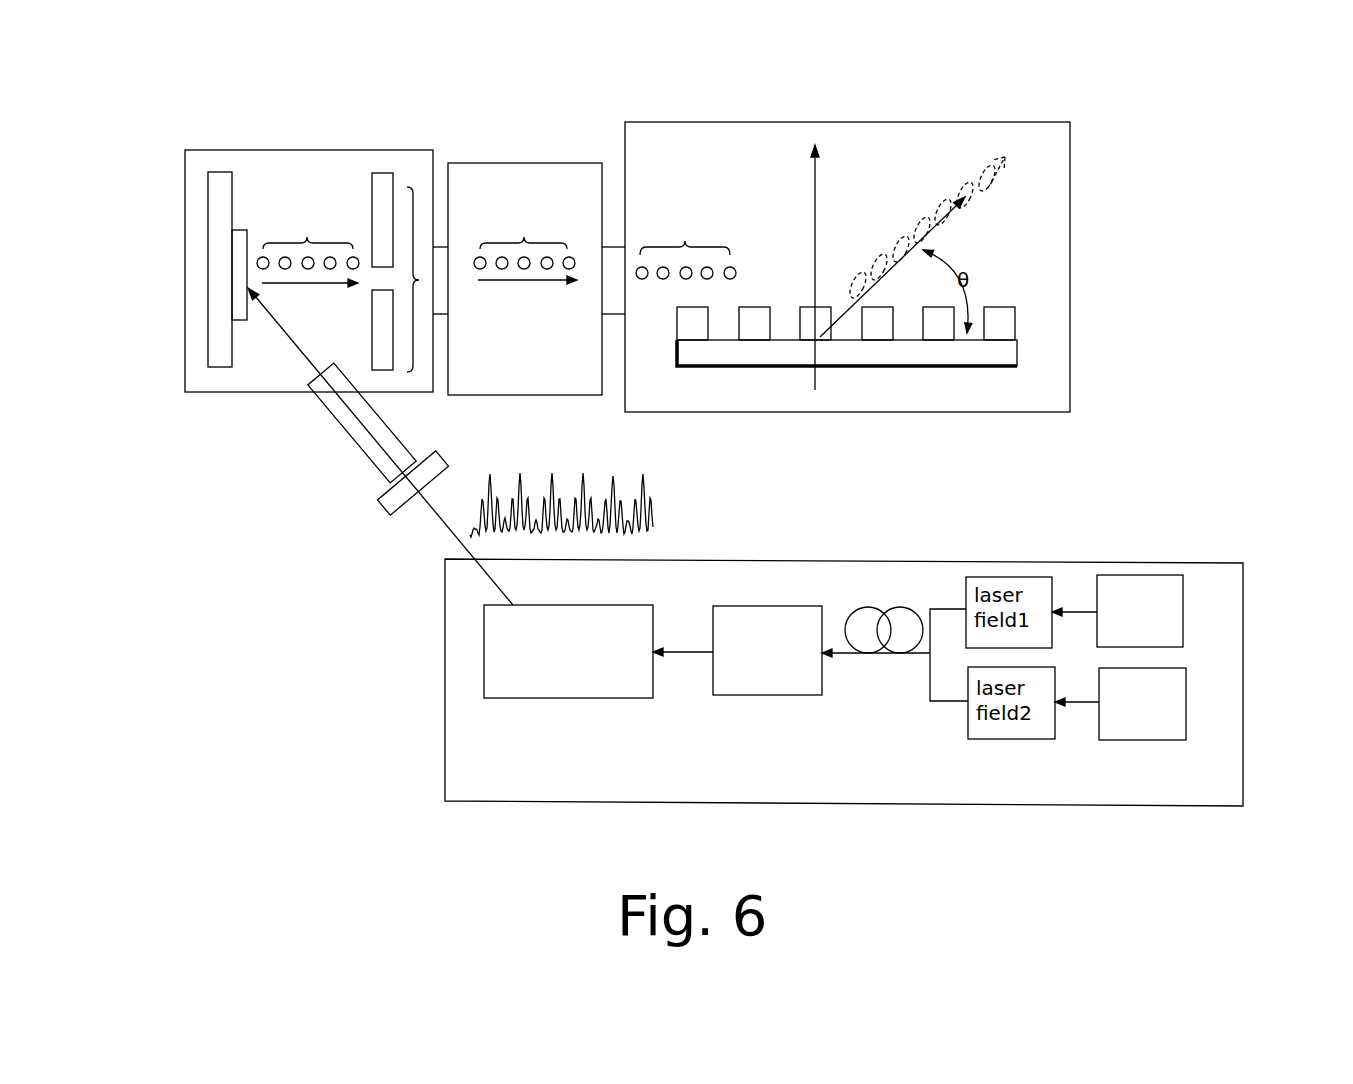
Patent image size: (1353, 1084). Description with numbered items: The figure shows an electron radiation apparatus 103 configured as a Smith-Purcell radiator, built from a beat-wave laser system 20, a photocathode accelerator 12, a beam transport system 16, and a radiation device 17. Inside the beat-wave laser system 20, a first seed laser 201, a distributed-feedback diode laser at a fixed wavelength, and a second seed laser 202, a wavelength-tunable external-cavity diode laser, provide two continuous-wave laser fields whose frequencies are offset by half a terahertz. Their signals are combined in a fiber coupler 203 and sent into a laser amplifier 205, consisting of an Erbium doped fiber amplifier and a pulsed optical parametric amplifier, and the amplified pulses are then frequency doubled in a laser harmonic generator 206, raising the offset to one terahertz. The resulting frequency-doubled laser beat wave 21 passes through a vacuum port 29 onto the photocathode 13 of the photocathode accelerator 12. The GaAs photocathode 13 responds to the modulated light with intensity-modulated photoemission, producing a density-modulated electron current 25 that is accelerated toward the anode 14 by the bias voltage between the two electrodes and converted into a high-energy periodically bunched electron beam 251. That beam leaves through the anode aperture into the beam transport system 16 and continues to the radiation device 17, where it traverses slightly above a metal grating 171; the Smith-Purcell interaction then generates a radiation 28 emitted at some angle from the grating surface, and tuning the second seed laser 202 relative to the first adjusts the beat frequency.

The electron radiation apparatus 103 is at (93, 92).
The photocathode accelerator 12 is at (184, 267).
The photocathode 13 is at (222, 172).
The density-modulated electron current 25 is at (307, 238).
The anode 14 is at (418, 185).
The beam transport system 16 is at (527, 163).
The radiation device 17 is at (876, 122).
The periodically bunched electron beam 251 is at (545, 240).
The radiation 28 is at (1000, 196).
The metal grating 171 is at (1017, 353).
The vacuum port 29 is at (352, 436).
The laser beat wave 21 is at (658, 522).
The beat-wave laser system 20 is at (840, 805).
The laser harmonic generator 206 is at (485, 660).
The laser amplifier 205 is at (733, 605).
The fiber coupler 203 is at (888, 607).
The first seed laser 201 is at (1185, 617).
The second seed laser 202 is at (1186, 717).